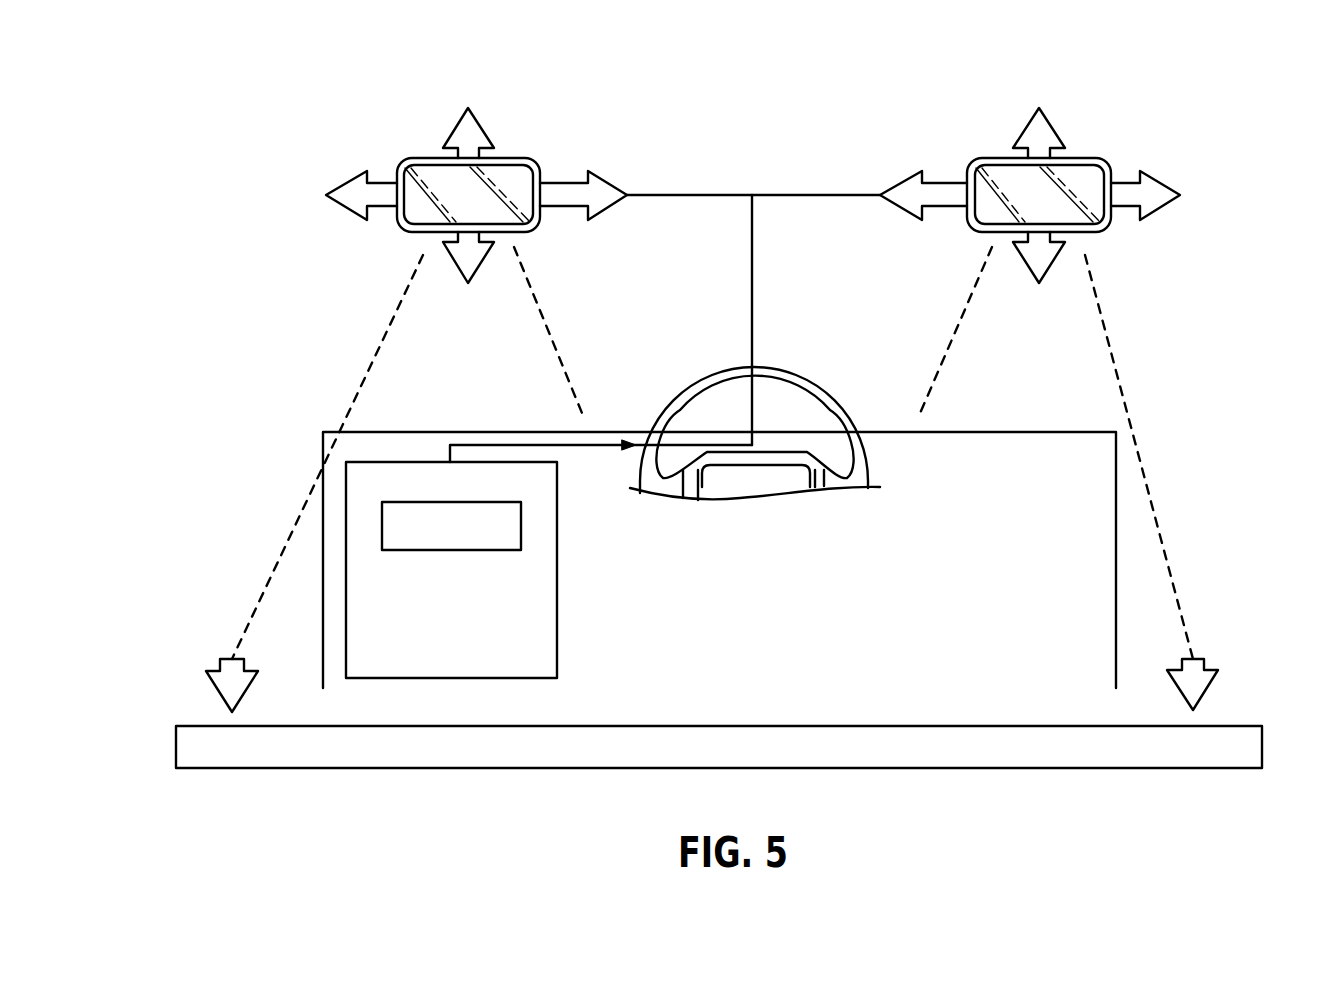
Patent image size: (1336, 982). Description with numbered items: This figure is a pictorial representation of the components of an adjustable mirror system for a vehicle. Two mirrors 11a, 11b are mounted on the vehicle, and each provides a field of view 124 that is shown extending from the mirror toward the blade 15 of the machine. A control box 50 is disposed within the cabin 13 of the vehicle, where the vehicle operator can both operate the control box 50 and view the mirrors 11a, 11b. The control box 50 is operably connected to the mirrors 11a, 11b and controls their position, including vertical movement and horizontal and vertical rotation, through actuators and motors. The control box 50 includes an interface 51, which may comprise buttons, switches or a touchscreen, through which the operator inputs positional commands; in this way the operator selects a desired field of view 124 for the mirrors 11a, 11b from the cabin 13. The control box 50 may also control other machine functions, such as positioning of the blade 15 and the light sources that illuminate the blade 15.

The mirror 11a is at (1084, 158).
The mirror 11b is at (522, 158).
The cabin 13 is at (1116, 437).
The blade 15 is at (1240, 726).
The control box 50 is at (557, 663).
The interface 51 is at (521, 538).
The field of view 124 is at (378, 342).